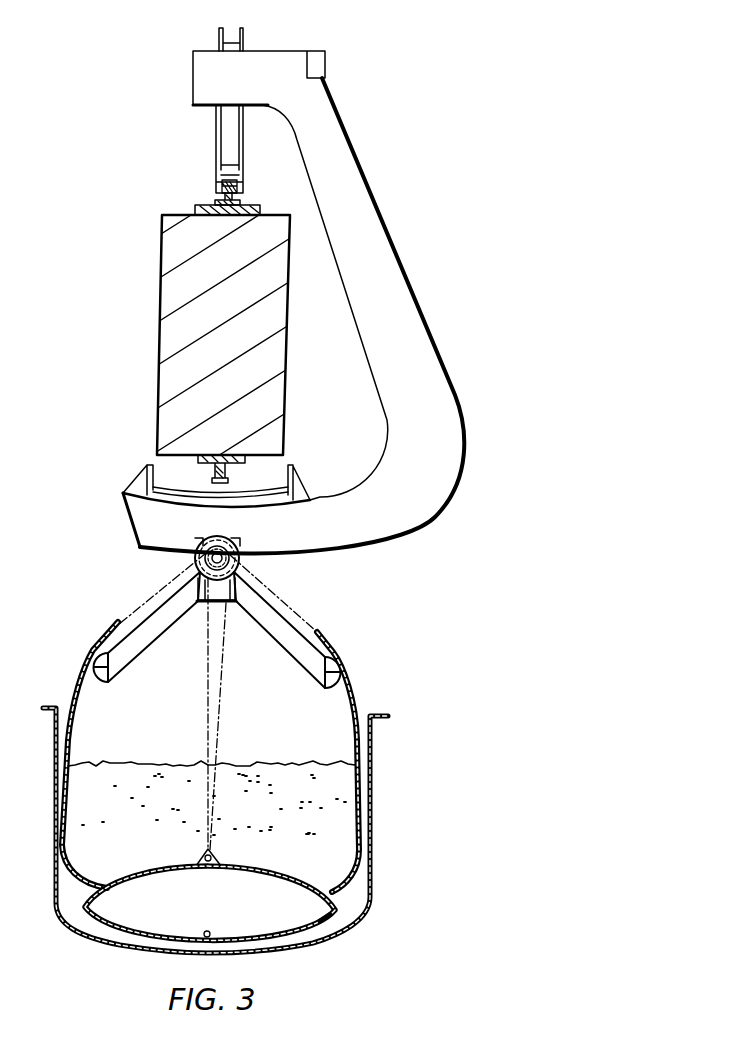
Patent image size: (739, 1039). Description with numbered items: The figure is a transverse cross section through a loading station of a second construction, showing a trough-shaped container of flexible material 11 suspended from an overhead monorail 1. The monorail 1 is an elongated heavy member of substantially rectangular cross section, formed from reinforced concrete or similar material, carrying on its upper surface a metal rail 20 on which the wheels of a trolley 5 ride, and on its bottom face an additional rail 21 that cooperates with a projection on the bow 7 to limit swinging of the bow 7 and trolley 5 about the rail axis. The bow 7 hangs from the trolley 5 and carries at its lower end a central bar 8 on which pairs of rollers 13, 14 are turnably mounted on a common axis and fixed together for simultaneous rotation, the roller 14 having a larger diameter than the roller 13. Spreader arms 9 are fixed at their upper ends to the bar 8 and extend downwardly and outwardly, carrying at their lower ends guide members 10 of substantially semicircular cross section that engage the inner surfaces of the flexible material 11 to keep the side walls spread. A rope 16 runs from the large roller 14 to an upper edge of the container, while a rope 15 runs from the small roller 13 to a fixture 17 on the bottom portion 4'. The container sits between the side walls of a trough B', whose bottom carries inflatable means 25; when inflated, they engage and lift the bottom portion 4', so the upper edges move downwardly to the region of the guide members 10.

The monorail 1 is at (170, 290).
The trolleys 5 is at (222, 110).
The bow 7 is at (368, 220).
The central bar 8 is at (237, 590).
The spreader arms 9 is at (282, 640).
The guide members 10 is at (350, 668).
The flexible material 11 is at (357, 692).
The roller 13 is at (200, 550).
The roller 14 is at (240, 553).
The rope 15 is at (213, 734).
The rope 16 is at (300, 615).
The fixture 17 is at (219, 858).
The metal rail 20 is at (222, 195).
The additional rail 21 is at (215, 468).
The inflatable means 25 is at (312, 920).
The bottom portion 4' is at (210, 881).
The trough B' is at (242, 830).